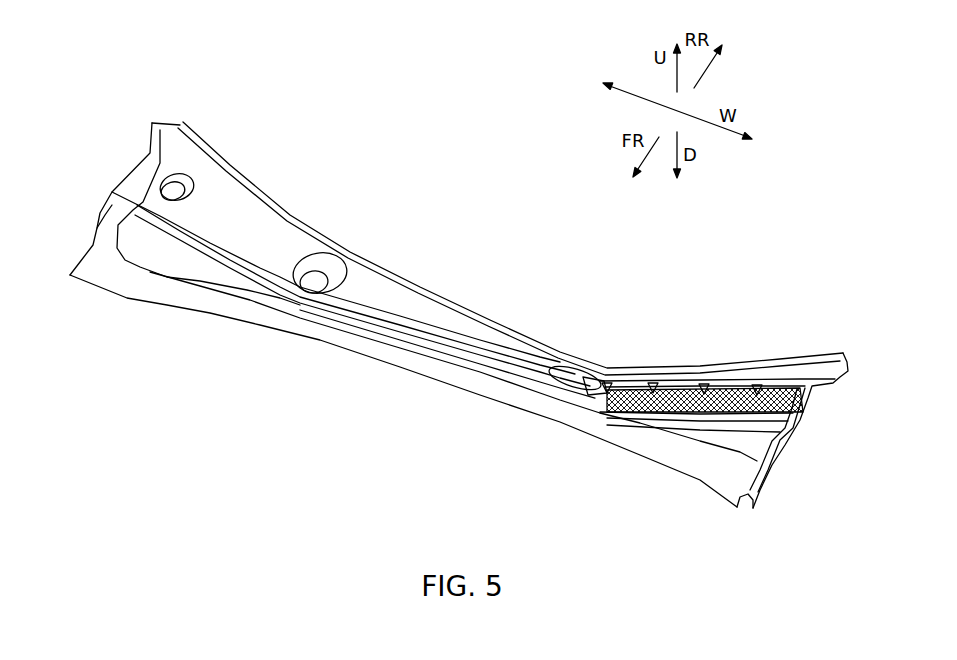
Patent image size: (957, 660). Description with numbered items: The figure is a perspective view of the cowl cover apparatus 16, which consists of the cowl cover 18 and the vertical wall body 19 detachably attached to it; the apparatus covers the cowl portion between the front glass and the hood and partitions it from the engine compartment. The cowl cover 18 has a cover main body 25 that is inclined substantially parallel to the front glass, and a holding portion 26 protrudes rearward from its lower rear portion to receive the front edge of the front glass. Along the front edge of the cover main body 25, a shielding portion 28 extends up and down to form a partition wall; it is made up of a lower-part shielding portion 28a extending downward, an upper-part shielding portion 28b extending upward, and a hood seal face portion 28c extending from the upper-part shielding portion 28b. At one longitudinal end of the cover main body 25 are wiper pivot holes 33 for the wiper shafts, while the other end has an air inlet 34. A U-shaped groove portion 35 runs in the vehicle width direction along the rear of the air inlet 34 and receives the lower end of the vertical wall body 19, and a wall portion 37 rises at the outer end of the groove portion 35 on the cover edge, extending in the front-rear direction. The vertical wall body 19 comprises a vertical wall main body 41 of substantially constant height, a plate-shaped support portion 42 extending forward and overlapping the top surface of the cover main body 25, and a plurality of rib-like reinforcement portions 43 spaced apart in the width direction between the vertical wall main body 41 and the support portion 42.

The cowl cover apparatus 16 is at (458, 237).
The cowl cover 18 is at (504, 314).
The vertical wall body 19 is at (728, 368).
The cover main body 25 is at (405, 305).
The holding portion 26 is at (392, 276).
The shielding portion 28 is at (228, 352).
The lower-part shielding portion 28a is at (211, 302).
The upper-part shielding portion 28b is at (177, 270).
The hood seal face portion 28c is at (132, 283).
The wiper pivot holes 33 is at (181, 178).
The air inlet 34 is at (668, 422).
The groove portion 35 is at (582, 388).
The wall portion 37 is at (804, 403).
The vertical wall main body 41 is at (630, 388).
The support portion 42 is at (603, 398).
The reinforcement portion 43 is at (606, 380).